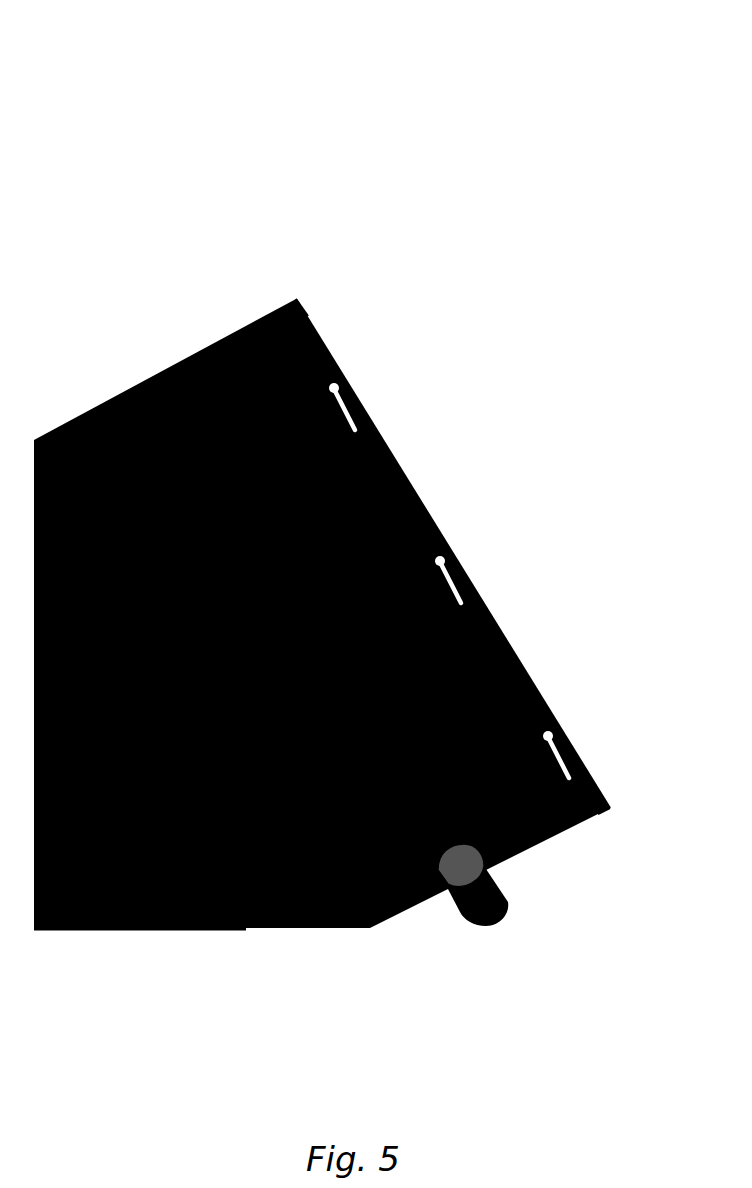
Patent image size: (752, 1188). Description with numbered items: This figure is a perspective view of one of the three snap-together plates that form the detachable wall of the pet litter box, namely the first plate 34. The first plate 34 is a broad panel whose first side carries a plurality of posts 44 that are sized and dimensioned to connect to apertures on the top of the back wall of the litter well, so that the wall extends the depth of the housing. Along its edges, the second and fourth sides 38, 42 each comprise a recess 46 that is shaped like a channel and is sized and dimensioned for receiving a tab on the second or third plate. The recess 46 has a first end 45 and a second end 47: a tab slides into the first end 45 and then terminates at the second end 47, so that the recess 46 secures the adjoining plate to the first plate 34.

The first plate 34 is at (620, 107).
The tray side wall / rail 38, 42 is at (553, 563).
The post 44 is at (470, 897).
The first end 45 is at (299, 285).
The recess 46 is at (408, 505).
The second end 47 is at (602, 817).